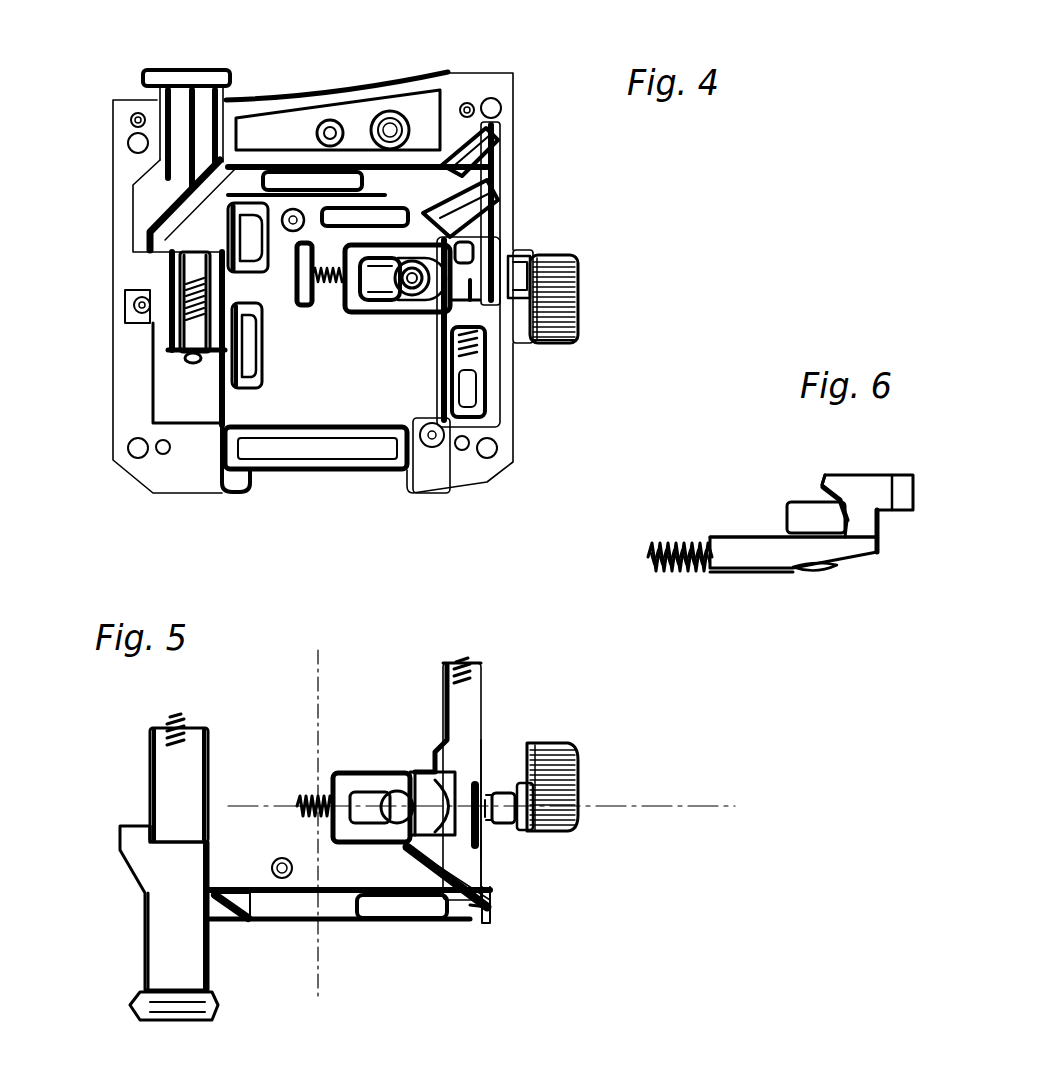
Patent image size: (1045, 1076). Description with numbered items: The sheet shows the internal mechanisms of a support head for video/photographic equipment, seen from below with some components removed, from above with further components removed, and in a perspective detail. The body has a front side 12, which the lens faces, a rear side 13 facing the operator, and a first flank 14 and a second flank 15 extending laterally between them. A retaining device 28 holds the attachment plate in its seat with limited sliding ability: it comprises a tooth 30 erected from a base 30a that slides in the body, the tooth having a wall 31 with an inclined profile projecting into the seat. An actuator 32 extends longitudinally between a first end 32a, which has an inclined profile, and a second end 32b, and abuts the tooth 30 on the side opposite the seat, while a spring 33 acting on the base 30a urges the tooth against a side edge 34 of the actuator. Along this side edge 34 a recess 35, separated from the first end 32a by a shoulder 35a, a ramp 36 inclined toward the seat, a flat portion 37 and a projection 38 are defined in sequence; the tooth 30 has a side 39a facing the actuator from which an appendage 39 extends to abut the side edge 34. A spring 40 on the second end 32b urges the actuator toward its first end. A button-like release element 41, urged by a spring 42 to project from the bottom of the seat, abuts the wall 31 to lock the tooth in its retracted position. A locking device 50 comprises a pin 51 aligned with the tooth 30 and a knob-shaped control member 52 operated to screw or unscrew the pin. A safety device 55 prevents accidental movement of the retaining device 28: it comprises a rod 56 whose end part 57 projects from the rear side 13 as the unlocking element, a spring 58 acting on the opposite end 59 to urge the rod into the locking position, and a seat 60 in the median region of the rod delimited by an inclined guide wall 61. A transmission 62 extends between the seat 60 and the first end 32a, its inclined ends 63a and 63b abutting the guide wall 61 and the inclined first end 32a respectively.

In FIG. 4, the front side 12 is at (268, 472).
In FIG. 4, the rear side 13 is at (298, 100).
In FIG. 4, the first flank 14 is at (512, 437).
In FIG. 4, the second flank 15 is at (113, 420).
In FIG. 5, the retaining device 28 is at (404, 758).
In FIG. 6, the retaining device 28 is at (869, 468).
In FIG. 5, the tooth 30 is at (436, 722).
In FIG. 6, the tooth 30 is at (833, 470).
In FIG. 4, the base 30a is at (365, 306).
In FIG. 5, the base 30a is at (360, 775).
In FIG. 6, the base 30a is at (758, 558).
In FIG. 6, the wall 31 is at (824, 490).
In FIG. 5, the actuator 32 is at (481, 698).
In FIG. 4, the first end 32a is at (427, 213).
In FIG. 5, the first end 32a is at (455, 915).
In FIG. 5, the second end 32b is at (443, 663).
In FIG. 4, the spring 33 is at (323, 288).
In FIG. 5, the spring 33 is at (303, 800).
In FIG. 6, the spring 33 is at (665, 568).
In FIG. 5, the side edge 34 is at (420, 797).
In FIG. 4, the recess 35 is at (492, 262).
In FIG. 5, the recess 35 is at (480, 855).
In FIG. 5, the shoulder 35a is at (408, 845).
In FIG. 5, the ramp 36 is at (572, 748).
In FIG. 4, the flat portion 37 is at (578, 323).
In FIG. 5, the flat portion 37 is at (532, 748).
In FIG. 4, the projection 38 is at (472, 362).
In FIG. 5, the projection 38 is at (447, 785).
In FIG. 4, the appendage 39 is at (445, 300).
In FIG. 5, the appendage 39 is at (500, 838).
In FIG. 6, the appendage 39 is at (912, 512).
In FIG. 4, the side 39a is at (512, 268).
In FIG. 5, the side 39a is at (482, 795).
In FIG. 5, the spring 40 is at (462, 657).
In FIG. 5, the release element 41 is at (396, 825).
In FIG. 6, the release element 41 is at (792, 517).
In FIG. 4, the spring 42 is at (422, 300).
In FIG. 6, the spring 42 is at (822, 570).
In FIG. 4, the locking device 50 is at (530, 253).
In FIG. 5, the pin 51 is at (508, 827).
In FIG. 4, the control member 52 is at (580, 293).
In FIG. 5, the control member 52 is at (580, 788).
In FIG. 5, the safety device 55 is at (136, 897).
In FIG. 4, the rod 56 is at (178, 163).
In FIG. 5, the rod 56 is at (159, 950).
In FIG. 4, the end part 57 is at (190, 74).
In FIG. 5, the end part 57 is at (173, 1013).
In FIG. 4, the spring 58 is at (192, 366).
In FIG. 5, the spring 58 is at (172, 718).
In FIG. 4, the end 59 is at (197, 362).
In FIG. 5, the end 59 is at (197, 728).
In FIG. 4, the seat 60 is at (150, 240).
In FIG. 4, the guide wall 61 is at (190, 235).
In FIG. 4, the transmission 62 is at (377, 176).
In FIG. 5, the transmission 62 is at (350, 916).
In FIG. 4, the end 63a is at (200, 180).
In FIG. 5, the end 63a is at (213, 923).
In FIG. 4, the end 63b is at (442, 163).
In FIG. 5, the end 63b is at (475, 905).